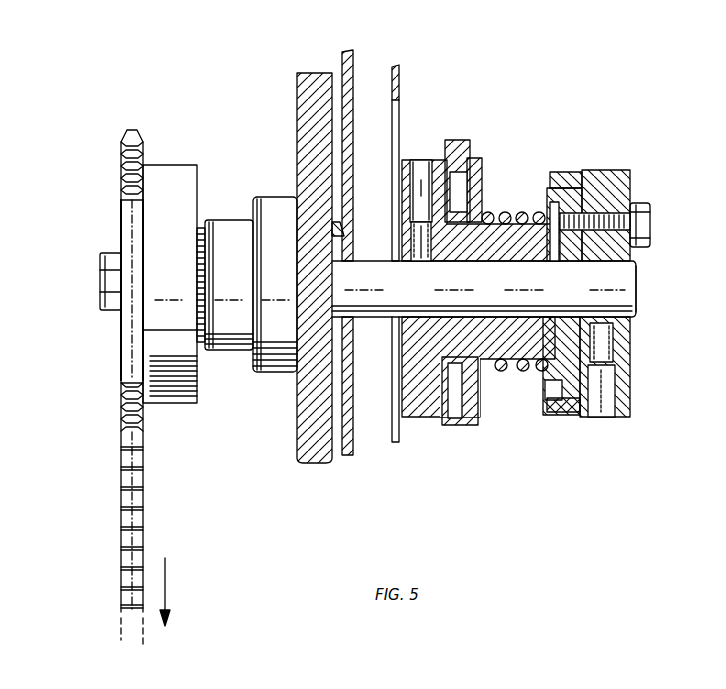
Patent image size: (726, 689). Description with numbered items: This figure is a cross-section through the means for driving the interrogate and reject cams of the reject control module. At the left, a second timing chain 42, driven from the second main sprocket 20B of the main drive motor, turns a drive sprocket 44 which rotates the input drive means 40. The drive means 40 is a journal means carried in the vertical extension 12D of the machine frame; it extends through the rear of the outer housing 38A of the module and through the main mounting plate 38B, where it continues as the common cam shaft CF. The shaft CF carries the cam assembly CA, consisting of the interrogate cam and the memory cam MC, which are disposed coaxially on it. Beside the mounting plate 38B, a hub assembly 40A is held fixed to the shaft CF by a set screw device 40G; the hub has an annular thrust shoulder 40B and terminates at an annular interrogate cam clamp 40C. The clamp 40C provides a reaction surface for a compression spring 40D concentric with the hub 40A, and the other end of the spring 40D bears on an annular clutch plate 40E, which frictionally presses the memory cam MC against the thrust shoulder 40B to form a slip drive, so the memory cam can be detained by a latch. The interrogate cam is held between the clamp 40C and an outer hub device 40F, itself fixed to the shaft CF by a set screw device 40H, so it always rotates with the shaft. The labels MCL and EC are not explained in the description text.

The second timing chain 42 is at (118, 556).
The drive sprocket 44 is at (120, 404).
The input drive means 40 is at (286, 288).
The vertical extension 12D is at (310, 460).
The housing 38A is at (350, 440).
The main mounting plate 38B is at (399, 72).
The common cam shaft CF is at (500, 300).
The hub assembly 40A is at (512, 256).
The set screw device 40G is at (421, 262).
The magnetic clutch lining MCL is at (456, 146).
The memory cam MC is at (474, 183).
The interrogate cam clamp 40C is at (569, 262).
The cam assembly CA is at (681, 320).
The annular thrust shoulder 40B is at (443, 377).
The annular clutch plate 40E is at (478, 390).
The compression spring 40D is at (492, 360).
The electrical contact EC is at (562, 416).
The outer hub device 40F is at (624, 338).
The set screw device 40H is at (603, 346).
The second main sprocket 20B is at (165, 582).